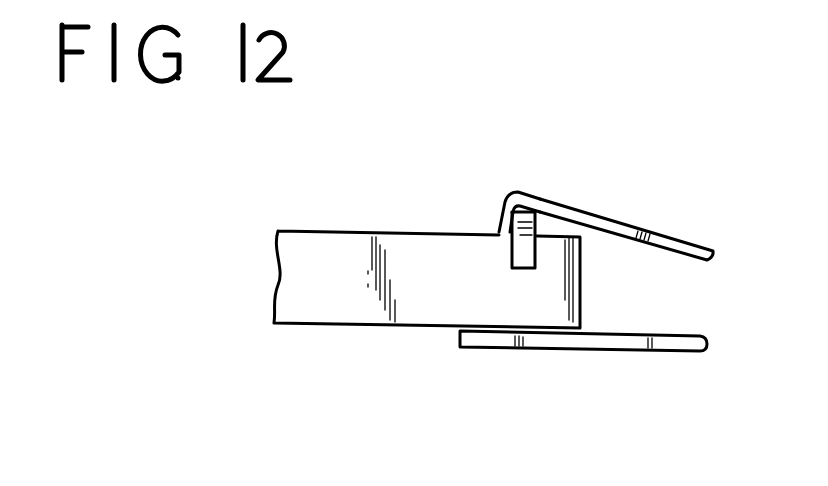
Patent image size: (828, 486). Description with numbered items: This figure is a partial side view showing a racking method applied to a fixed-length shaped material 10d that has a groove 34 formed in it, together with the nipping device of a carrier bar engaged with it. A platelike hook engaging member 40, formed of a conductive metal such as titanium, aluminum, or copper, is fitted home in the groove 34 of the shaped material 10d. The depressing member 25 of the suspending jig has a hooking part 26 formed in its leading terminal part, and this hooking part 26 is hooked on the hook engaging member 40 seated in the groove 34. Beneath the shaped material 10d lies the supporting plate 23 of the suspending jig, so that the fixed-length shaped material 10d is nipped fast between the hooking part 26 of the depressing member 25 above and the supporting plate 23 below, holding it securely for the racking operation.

The fixed-length shaped material 10d is at (368, 326).
The supporting plate 23 is at (661, 334).
The depressing member 25 is at (664, 233).
The hooking part 26 is at (499, 226).
The groove 34 is at (511, 263).
The hook engaging member 40 is at (527, 211).